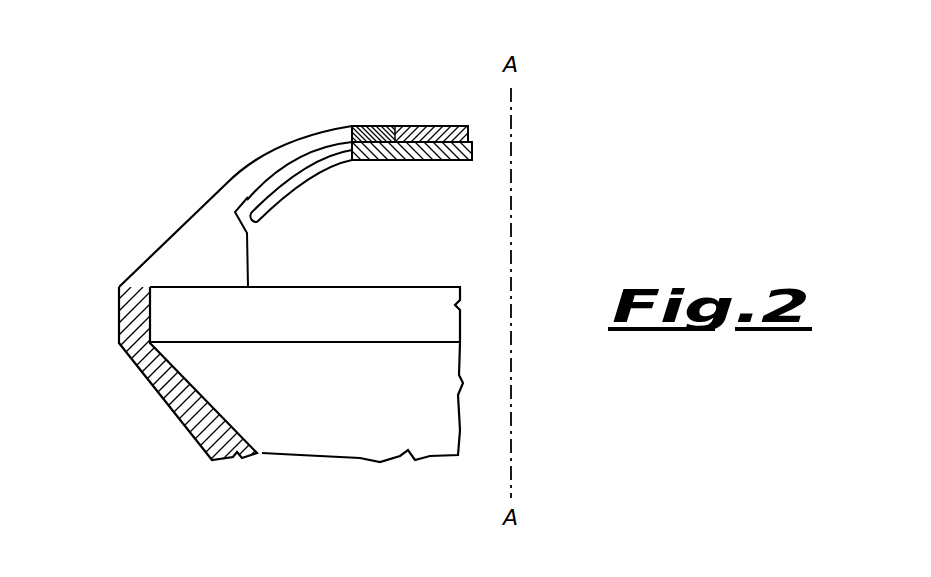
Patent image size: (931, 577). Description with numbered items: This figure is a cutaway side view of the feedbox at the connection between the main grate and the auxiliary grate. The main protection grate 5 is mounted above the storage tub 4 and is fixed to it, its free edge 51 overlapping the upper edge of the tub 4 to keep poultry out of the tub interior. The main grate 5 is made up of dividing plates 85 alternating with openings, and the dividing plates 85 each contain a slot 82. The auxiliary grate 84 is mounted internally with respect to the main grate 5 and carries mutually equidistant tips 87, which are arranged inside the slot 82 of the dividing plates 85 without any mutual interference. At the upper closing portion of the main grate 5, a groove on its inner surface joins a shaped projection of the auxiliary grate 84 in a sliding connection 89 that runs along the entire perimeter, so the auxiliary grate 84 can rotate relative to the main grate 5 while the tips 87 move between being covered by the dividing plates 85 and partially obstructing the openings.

The storage tub 4 is at (182, 423).
The main protection grate 5 is at (443, 127).
The free edge 51 is at (427, 297).
The slot 82 is at (257, 189).
The auxiliary grate 84 is at (444, 160).
The dividing plates 85 is at (177, 249).
The tips 87 is at (296, 180).
The sliding connection 89 is at (387, 138).